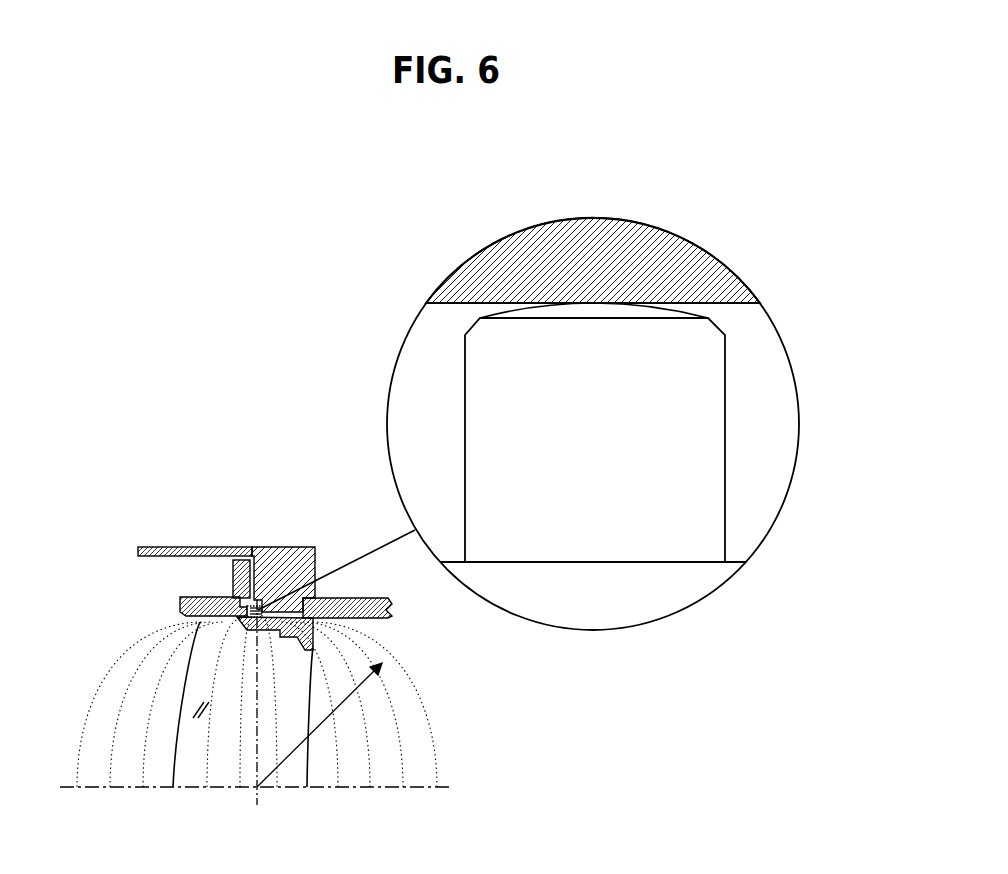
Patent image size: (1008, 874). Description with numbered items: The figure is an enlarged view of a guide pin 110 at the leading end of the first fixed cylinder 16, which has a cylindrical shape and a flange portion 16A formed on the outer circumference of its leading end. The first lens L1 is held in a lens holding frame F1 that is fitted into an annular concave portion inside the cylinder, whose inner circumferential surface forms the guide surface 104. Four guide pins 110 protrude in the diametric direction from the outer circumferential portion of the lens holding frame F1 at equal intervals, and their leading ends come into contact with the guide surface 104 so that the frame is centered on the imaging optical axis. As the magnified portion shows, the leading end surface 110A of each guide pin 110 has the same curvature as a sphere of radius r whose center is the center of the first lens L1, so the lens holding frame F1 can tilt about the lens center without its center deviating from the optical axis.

The first fixed cylinder 16 is at (598, 218).
The flange portion 16A is at (285, 547).
The guide surface 104 is at (750, 305).
The guide pin 110 is at (712, 440).
The leading end surface 110A is at (642, 312).
The lens holding frame F1 is at (180, 608).
The first lens L1 is at (288, 782).
The radius r is at (319, 725).